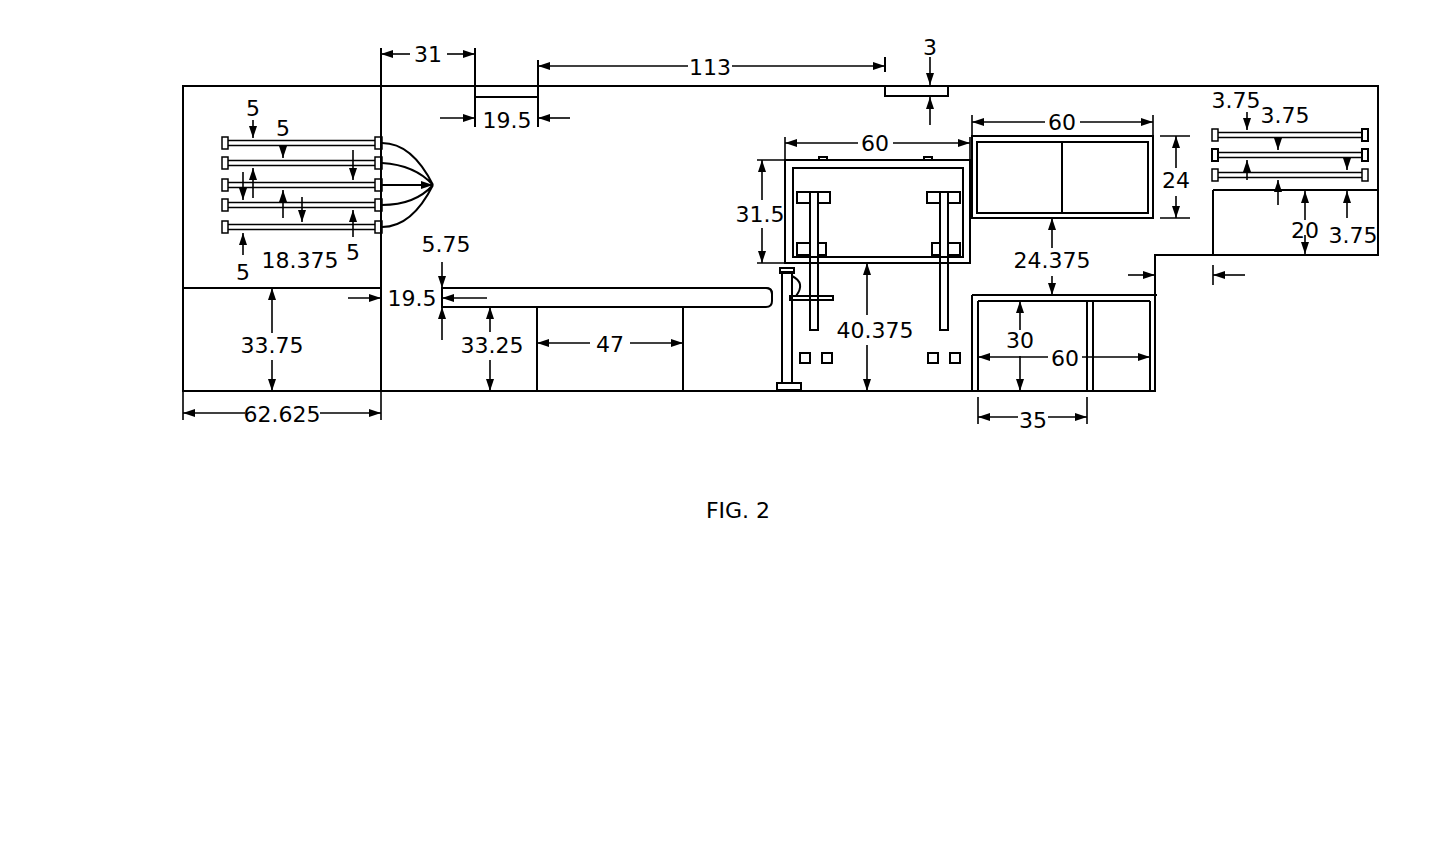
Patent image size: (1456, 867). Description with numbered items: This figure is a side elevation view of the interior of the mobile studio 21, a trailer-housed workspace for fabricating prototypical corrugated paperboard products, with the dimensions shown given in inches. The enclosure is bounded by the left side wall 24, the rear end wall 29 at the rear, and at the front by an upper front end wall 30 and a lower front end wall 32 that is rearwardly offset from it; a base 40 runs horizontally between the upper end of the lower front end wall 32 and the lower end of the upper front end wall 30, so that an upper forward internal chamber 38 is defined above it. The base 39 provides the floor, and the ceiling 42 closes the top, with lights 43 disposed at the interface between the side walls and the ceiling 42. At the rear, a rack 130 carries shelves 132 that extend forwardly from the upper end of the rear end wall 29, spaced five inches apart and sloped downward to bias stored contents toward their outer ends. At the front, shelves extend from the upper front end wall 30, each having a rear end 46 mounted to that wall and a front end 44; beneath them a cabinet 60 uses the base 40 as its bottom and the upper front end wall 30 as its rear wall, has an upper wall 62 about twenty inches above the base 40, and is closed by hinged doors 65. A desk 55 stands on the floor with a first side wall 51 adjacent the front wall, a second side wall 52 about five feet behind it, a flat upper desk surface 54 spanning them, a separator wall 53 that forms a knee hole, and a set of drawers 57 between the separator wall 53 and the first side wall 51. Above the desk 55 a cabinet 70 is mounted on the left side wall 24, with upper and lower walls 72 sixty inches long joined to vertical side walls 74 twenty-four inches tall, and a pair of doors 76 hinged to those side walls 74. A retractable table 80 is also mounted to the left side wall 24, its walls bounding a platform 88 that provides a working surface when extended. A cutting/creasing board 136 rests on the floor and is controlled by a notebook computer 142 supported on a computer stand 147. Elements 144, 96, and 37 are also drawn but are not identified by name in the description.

The mobile studio 21 is at (662, 122).
The left side wall 24 is at (586, 196).
The rear end wall 29 is at (183, 232).
The rack 130 is at (220, 143).
The shelves 132 is at (429, 185).
The lights 43 is at (540, 95).
The cutting/creasing board 136 is at (568, 284).
The shelf end 144 is at (607, 288).
The computer 142 is at (780, 272).
The computer stand 147 is at (776, 357).
The retractable table 80 is at (783, 156).
The platform 88 is at (838, 187).
The vertical rods 96 is at (820, 228).
The cabinet 70 is at (1095, 133).
The upper and lower walls 72 is at (1035, 135).
The vertical side walls 74 is at (985, 190).
The doors 76 is at (1027, 202).
The ceiling 42 is at (1025, 86).
The front end 44 is at (1212, 152).
The doors 65 is at (1213, 215).
The step 37 is at (1153, 257).
The lower front end wall 32 is at (1157, 325).
The desk 55 is at (1005, 290).
The upper desk surface 54 is at (1070, 295).
The second side wall 52 is at (968, 373).
The separator wall 53 is at (1095, 380).
The first side wall 51 is at (1148, 373).
The set of drawers 57 is at (1110, 337).
The base 39 is at (712, 393).
The upper forward internal chamber 38 is at (1334, 116).
The upper front end wall 30 is at (1380, 135).
The rear end 46 is at (1370, 130).
The upper wall 62 is at (1368, 192).
The cabinet 60 is at (1231, 232).
The base 40 is at (1290, 256).